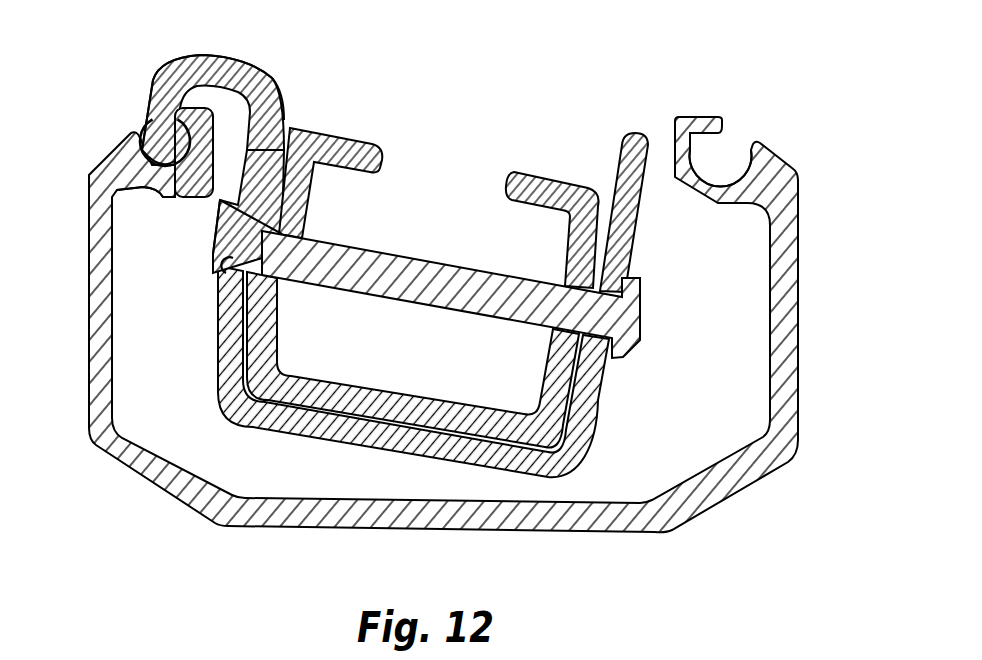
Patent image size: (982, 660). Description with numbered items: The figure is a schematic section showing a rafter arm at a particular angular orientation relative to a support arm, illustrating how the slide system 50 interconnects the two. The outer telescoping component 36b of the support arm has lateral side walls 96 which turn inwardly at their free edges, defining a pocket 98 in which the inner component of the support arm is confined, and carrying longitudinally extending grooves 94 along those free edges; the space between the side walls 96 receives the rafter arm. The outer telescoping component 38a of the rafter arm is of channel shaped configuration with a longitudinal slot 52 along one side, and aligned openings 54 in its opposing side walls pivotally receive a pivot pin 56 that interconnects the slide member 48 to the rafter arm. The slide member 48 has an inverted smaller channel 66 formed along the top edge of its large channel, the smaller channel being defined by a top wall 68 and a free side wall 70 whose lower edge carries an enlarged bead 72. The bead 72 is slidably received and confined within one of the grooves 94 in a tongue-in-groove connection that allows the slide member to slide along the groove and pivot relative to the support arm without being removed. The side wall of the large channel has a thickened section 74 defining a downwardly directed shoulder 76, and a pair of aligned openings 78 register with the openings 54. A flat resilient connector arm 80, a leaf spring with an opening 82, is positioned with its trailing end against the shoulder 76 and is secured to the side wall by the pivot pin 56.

The outer telescoping component of the support arm 36b is at (645, 533).
The outer telescoping component of the rafter arm 38a is at (370, 148).
The slide member 48 is at (262, 72).
The slide system 50 is at (476, 128).
The longitudinal slot 52 is at (382, 163).
The aligned openings 54 is at (284, 272).
The pivot pin 56 is at (498, 272).
The inverted smaller channel 66 is at (222, 97).
The top wall 68 is at (208, 60).
The free side wall 70 is at (152, 127).
The enlarged bead 72 is at (206, 185).
The thickened section 74 is at (268, 96).
The downwardly directed shoulder 76 is at (254, 210).
The aligned openings 78 is at (226, 262).
The resilient connector arm 80 is at (217, 330).
The opening 82 is at (218, 268).
The longitudinally extending grooves 94 is at (172, 142).
The lateral side walls 96 is at (800, 323).
The pocket 98 is at (163, 408).